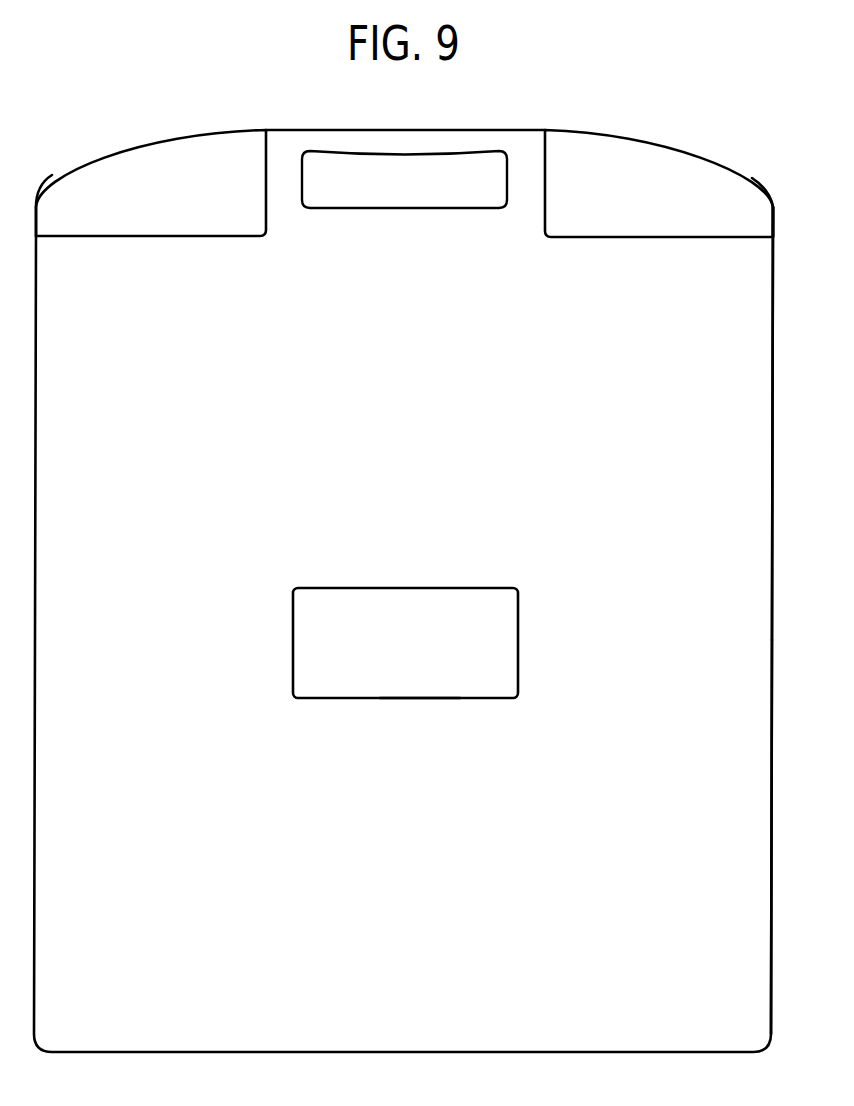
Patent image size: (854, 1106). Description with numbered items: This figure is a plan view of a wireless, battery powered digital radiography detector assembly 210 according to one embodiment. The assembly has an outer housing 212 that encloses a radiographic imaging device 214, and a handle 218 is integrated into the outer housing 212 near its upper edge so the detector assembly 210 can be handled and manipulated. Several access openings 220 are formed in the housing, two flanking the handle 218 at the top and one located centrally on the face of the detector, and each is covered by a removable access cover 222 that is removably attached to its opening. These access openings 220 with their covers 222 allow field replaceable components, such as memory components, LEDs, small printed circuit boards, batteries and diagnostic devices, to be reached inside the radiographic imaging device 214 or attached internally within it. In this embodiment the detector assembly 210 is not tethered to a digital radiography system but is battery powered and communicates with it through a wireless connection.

The digital radiography detector assembly 210 is at (640, 100).
The outer housing 212 is at (747, 486).
The radiographic imaging device 214 is at (773, 700).
The handle 218 is at (396, 138).
The access openings 220 is at (149, 144).
The removable access covers 222 is at (58, 196).